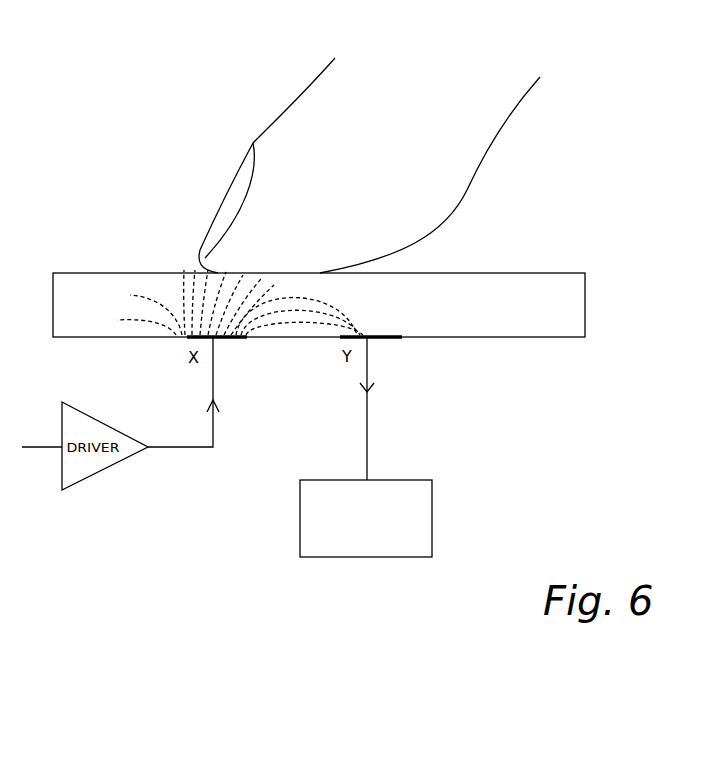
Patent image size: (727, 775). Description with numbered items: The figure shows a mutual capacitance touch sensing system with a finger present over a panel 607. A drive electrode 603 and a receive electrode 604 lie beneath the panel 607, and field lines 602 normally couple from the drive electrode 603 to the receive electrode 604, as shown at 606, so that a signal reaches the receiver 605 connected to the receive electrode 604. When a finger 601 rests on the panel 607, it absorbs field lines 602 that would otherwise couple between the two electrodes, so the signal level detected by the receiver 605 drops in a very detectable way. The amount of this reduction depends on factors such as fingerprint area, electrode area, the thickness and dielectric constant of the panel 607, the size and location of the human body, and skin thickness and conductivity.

The finger 601 is at (273, 130).
The field lines 602 is at (187, 276).
The drive electrode 603 is at (238, 339).
The receive electrode 604 is at (390, 339).
The receiver 605 is at (433, 485).
The coupling field lines 606 is at (352, 314).
The panel 607 is at (92, 276).